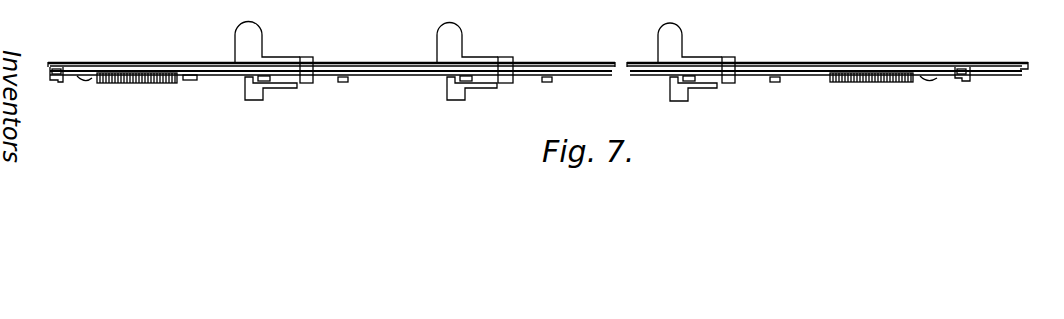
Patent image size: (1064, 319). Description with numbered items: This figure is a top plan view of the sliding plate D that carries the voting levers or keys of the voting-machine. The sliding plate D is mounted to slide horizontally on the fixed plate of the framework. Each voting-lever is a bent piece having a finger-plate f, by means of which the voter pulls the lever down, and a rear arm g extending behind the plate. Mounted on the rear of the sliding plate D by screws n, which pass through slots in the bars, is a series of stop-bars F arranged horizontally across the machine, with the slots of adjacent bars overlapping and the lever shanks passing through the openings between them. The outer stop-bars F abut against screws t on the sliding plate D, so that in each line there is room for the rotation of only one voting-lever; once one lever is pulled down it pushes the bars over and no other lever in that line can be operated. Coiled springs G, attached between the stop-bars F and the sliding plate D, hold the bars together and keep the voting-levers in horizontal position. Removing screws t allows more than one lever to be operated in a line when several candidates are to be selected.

The sliding plate D is at (353, 62).
The stop-bars F is at (387, 76).
The finger-plate f is at (258, 37).
The rear arm g is at (255, 102).
The screws n is at (339, 82).
The coiled springs G is at (137, 85).
The screws t is at (58, 82).